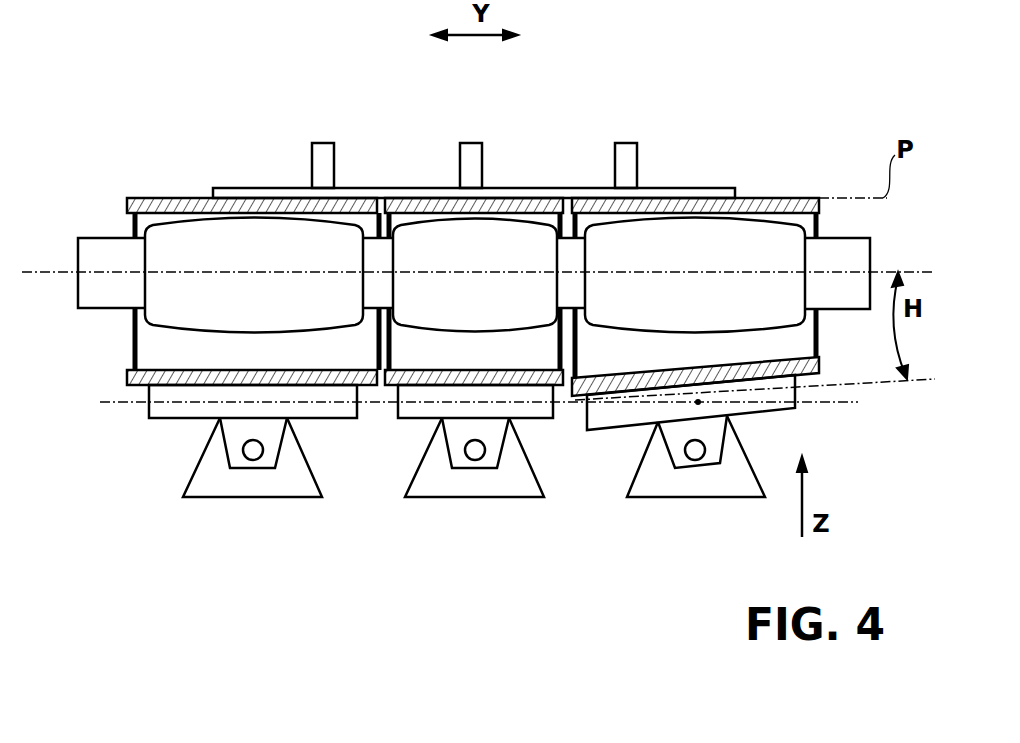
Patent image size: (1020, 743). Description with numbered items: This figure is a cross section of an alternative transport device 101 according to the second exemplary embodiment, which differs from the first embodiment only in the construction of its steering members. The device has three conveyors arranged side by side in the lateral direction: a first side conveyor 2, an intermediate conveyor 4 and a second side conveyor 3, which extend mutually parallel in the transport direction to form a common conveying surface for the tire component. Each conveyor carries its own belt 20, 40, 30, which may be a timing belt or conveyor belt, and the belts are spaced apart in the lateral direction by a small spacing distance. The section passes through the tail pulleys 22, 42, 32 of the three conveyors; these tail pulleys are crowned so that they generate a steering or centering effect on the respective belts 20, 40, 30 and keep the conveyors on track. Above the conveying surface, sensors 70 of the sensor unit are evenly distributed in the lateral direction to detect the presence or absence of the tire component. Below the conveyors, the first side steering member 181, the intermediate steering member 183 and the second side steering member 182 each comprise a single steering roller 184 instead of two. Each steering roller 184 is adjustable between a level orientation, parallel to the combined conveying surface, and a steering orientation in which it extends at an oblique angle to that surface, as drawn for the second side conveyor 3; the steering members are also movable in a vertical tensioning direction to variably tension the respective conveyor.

The transport device 101 is at (110, 118).
The sensor 70 is at (323, 157).
The first side conveyor 2 is at (135, 343).
The tail pulley 22 is at (230, 327).
The belt 20 is at (130, 376).
The intermediate conveyor 4 is at (395, 358).
The tail pulley 42 is at (500, 318).
The belt 40 is at (562, 393).
The second side conveyor 3 is at (808, 330).
The tail pulley 32 is at (643, 325).
The belt 30 is at (803, 372).
The steering roller 184 is at (622, 408).
The first side steering member 181 is at (293, 483).
The intermediate steering member 183 is at (512, 485).
The second side steering member 182 is at (742, 480).